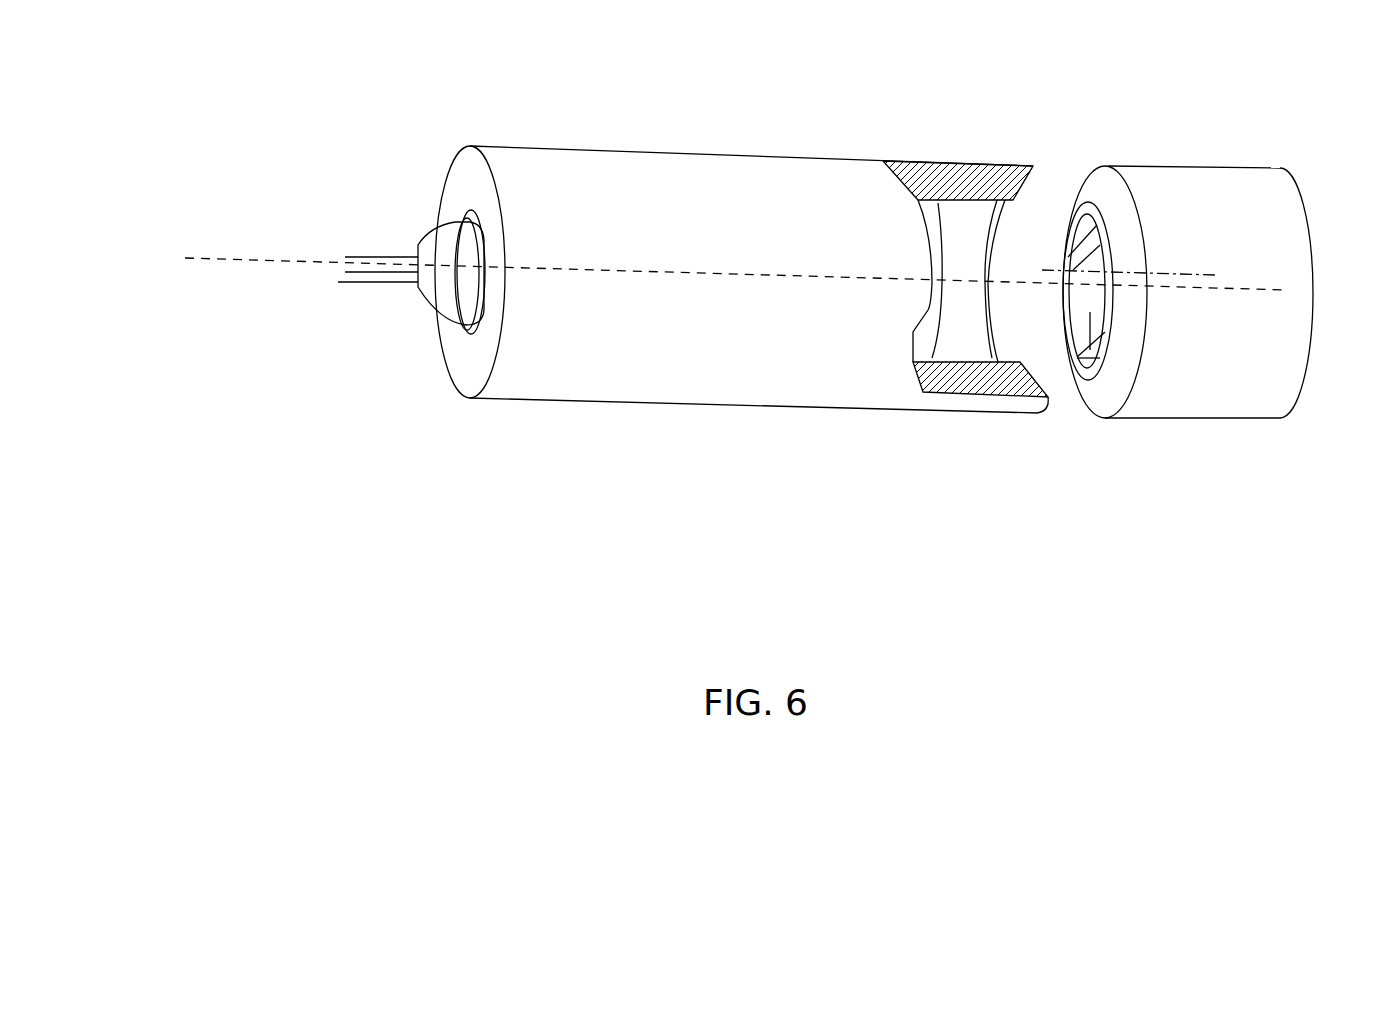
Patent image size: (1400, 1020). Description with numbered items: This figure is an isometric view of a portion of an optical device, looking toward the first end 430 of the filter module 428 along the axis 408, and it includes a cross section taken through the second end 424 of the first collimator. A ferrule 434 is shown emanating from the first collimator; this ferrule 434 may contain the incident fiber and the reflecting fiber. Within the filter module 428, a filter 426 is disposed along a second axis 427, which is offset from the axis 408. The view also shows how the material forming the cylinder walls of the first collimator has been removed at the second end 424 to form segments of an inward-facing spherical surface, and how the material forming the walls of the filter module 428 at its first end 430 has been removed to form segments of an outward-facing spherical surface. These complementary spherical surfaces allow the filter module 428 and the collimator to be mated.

The axis 408 is at (205, 247).
The ferrule 434 is at (422, 240).
The second end 424 is at (1010, 172).
The first end 430 is at (1097, 183).
The filter module 428 is at (1287, 163).
The axis 427 is at (1178, 273).
The filter 426 is at (1090, 312).